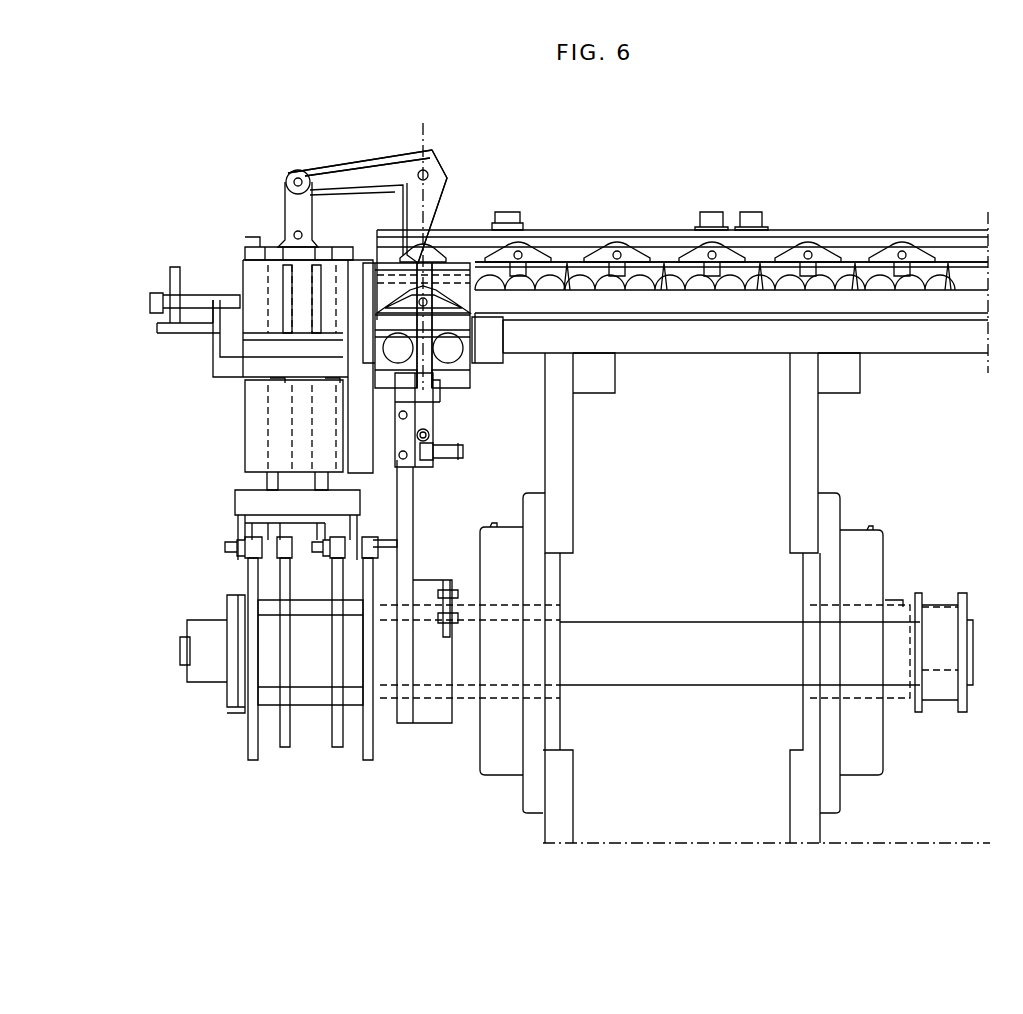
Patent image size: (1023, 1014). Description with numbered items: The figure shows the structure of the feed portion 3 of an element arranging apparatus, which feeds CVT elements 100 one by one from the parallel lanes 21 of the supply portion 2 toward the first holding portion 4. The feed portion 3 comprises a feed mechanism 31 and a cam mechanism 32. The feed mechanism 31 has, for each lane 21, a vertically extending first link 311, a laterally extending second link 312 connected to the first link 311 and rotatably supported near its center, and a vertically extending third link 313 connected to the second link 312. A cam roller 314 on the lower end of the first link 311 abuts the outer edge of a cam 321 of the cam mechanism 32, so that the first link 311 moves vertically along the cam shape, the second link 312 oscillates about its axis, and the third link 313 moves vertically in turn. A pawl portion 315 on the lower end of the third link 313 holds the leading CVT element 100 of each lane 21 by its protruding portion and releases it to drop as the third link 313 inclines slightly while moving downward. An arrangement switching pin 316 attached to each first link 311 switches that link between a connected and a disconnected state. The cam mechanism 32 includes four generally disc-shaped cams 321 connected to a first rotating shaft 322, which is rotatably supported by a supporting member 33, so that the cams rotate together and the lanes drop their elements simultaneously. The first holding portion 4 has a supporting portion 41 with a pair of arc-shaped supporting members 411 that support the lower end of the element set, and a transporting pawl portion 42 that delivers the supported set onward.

The supply portion 2 is at (762, 230).
The lane 21 is at (947, 250).
The CVT element 100 is at (519, 248).
The feed portion 3 is at (380, 160).
The feed mechanism 31 is at (318, 172).
The first link 311 is at (268, 408).
The second link 312 is at (341, 157).
The third link 313 is at (443, 176).
The cam roller 314 is at (402, 760).
The pawl portion 315 is at (407, 253).
The arrangement switching pin 316 is at (198, 290).
The cam mechanism 32 is at (253, 722).
The cam 321 is at (368, 761).
The first rotating shaft 322 is at (656, 674).
The supporting member 33 is at (558, 522).
The first holding portion 4 is at (435, 372).
The supporting portion 41 is at (456, 350).
The supporting member 411 is at (400, 342).
The transporting pawl portion 42 is at (442, 383).